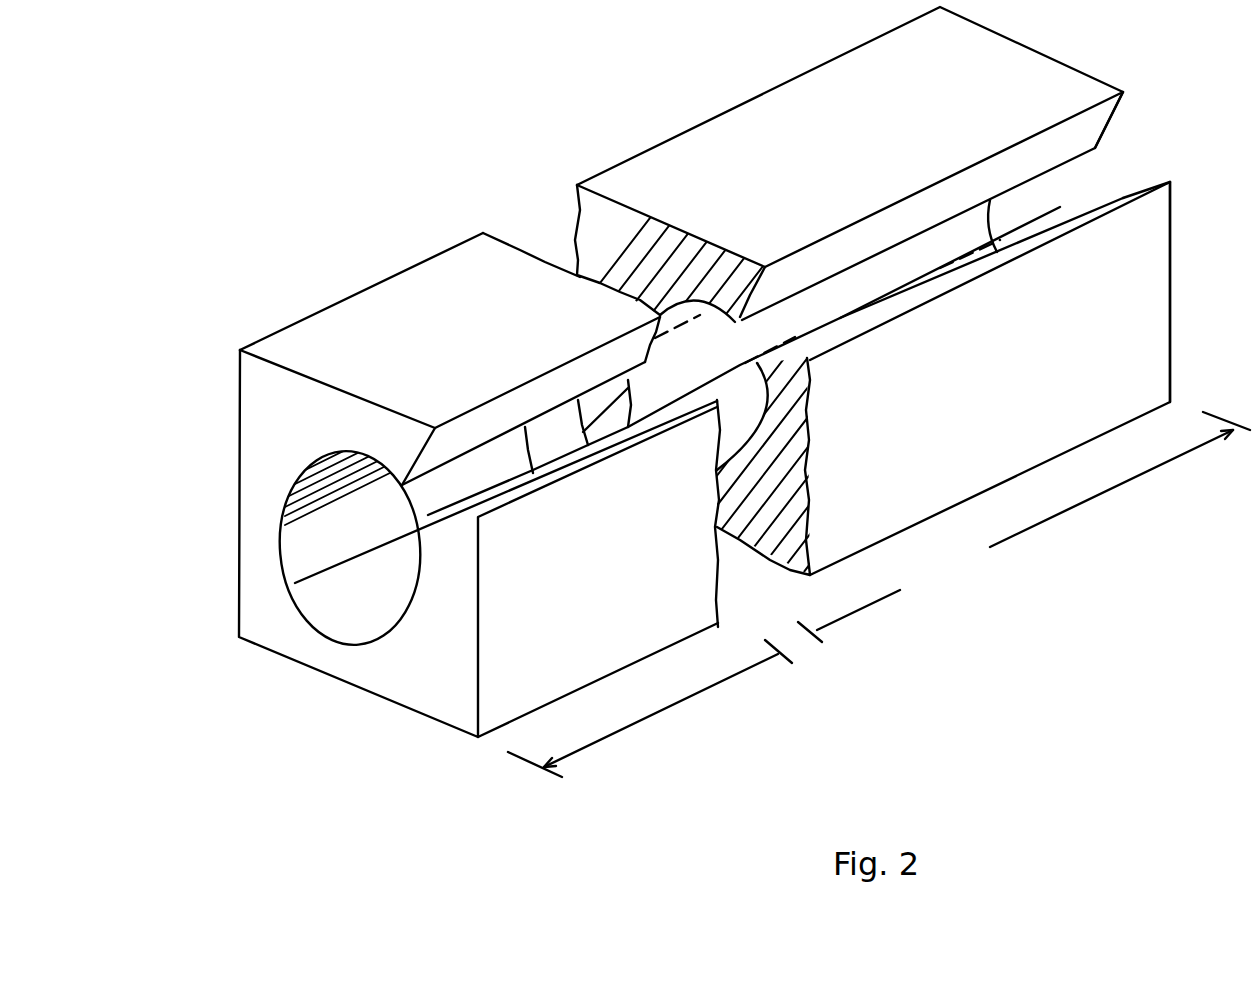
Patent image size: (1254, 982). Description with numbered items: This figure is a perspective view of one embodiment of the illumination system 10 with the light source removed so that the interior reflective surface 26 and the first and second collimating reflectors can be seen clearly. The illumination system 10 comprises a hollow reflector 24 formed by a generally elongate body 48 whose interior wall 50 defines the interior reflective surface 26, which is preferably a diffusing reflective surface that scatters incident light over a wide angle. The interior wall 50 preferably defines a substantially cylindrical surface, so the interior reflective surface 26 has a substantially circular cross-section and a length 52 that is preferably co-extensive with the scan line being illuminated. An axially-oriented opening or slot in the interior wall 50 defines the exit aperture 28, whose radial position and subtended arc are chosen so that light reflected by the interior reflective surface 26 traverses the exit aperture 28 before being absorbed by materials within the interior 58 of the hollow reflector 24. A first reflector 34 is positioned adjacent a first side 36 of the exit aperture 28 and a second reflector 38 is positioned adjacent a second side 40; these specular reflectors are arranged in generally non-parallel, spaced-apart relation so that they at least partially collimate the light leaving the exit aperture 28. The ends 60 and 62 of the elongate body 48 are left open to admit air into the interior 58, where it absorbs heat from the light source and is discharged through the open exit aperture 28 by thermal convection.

The illumination system 10 is at (345, 134).
The hollow reflector 24 is at (719, 100).
The interior reflective surface 26 is at (347, 618).
The exit aperture 28 is at (1115, 153).
The first reflector 34 is at (1100, 122).
The first side 36 is at (1022, 188).
The second reflector 38 is at (1105, 195).
The second side 40 is at (1062, 207).
The elongate body 48 is at (342, 298).
The interior wall 50 is at (377, 637).
The interior 58 is at (384, 521).
The end 60 is at (265, 423).
The end 62 is at (1172, 340).
The length 52 is at (879, 594).